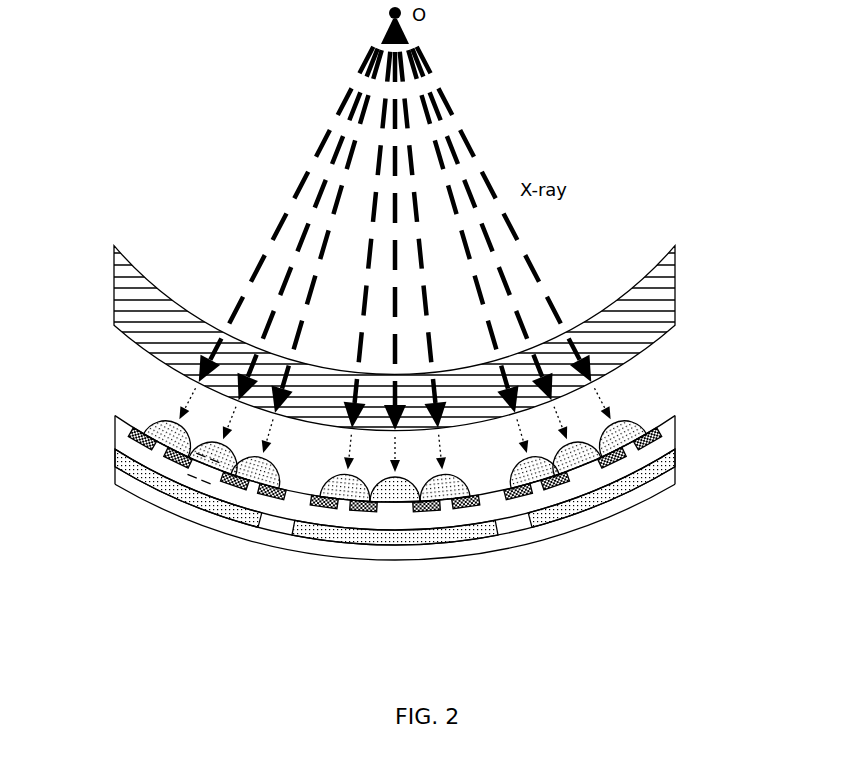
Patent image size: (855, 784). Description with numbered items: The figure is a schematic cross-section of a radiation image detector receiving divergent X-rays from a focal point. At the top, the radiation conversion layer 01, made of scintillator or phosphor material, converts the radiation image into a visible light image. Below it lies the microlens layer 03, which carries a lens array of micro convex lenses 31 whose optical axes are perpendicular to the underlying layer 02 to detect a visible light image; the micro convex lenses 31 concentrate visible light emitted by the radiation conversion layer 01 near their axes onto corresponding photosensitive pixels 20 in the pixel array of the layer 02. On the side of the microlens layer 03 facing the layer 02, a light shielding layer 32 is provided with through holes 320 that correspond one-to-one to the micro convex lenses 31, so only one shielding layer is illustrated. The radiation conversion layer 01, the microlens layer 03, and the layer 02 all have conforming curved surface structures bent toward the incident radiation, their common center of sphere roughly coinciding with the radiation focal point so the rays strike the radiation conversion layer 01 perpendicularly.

The radiation conversion layer 01 is at (663, 307).
The layer to detect a visible light image 02 is at (675, 463).
The microlens layer 03 is at (678, 403).
The micro convex lens 31 is at (155, 433).
The light shielding layer 32 is at (138, 439).
The through hole 320 is at (212, 483).
The photosensitive pixel 20 is at (398, 533).